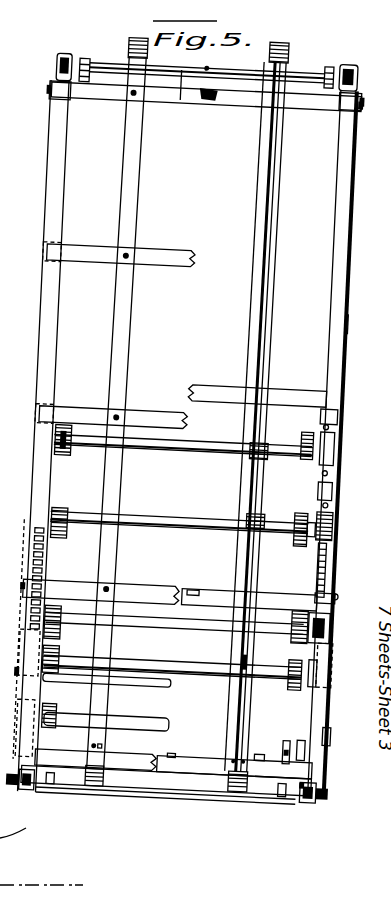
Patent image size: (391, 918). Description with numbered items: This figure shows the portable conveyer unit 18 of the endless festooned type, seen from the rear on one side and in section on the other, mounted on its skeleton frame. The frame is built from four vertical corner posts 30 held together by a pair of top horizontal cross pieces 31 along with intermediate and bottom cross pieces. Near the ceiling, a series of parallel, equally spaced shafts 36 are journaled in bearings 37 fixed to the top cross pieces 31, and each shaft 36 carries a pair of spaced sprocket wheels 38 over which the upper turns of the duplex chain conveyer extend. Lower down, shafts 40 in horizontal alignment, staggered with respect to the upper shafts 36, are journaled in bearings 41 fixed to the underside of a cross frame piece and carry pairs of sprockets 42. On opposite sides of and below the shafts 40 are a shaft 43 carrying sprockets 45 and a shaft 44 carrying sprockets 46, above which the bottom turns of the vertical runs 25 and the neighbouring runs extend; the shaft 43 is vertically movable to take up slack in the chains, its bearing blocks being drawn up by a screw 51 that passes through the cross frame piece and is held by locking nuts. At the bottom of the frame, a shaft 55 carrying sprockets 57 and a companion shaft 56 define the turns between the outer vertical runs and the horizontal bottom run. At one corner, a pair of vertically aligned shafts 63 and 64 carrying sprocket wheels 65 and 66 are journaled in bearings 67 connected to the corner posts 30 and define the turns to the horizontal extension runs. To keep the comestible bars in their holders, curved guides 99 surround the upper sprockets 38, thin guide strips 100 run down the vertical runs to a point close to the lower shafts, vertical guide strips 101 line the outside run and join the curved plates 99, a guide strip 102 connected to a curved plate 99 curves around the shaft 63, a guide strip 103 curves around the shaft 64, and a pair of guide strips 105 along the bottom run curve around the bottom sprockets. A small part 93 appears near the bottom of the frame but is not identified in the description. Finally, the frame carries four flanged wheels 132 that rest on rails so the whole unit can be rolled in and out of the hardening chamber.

The conveyer unit 18 is at (356, 303).
The vertical runs 25 is at (45, 643).
The vertical corner posts 30 is at (55, 157).
The top horizontal cross pieces 31 is at (53, 83).
The shafts 36 is at (215, 74).
The bearings 37 is at (58, 55).
The sprocket wheels 38 is at (331, 51).
The shafts 40 is at (177, 619).
The bearings 41 is at (320, 641).
The sprockets 42 is at (55, 626).
The shaft 43 is at (205, 668).
The shaft 44 is at (132, 718).
The sprockets 45 is at (290, 688).
The sprockets 46 is at (57, 701).
The screw 51 is at (330, 569).
The shaft 55 is at (258, 758).
The shaft 56 is at (120, 749).
The sprockets 57 is at (289, 745).
The shaft 63 is at (161, 444).
The shaft 64 is at (155, 515).
The sprocket wheels 65 is at (66, 448).
The sprocket wheels 66 is at (72, 490).
The bearings 67 is at (333, 518).
The bolt 93 is at (57, 782).
The curved guides 99 is at (131, 37).
The guide strips 100 is at (268, 208).
The guide strips 101 is at (128, 318).
The guide strip 102 is at (258, 318).
The guide strip 103 is at (236, 702).
The guide strips 105 is at (103, 777).
The flanged wheels 132 is at (307, 798).